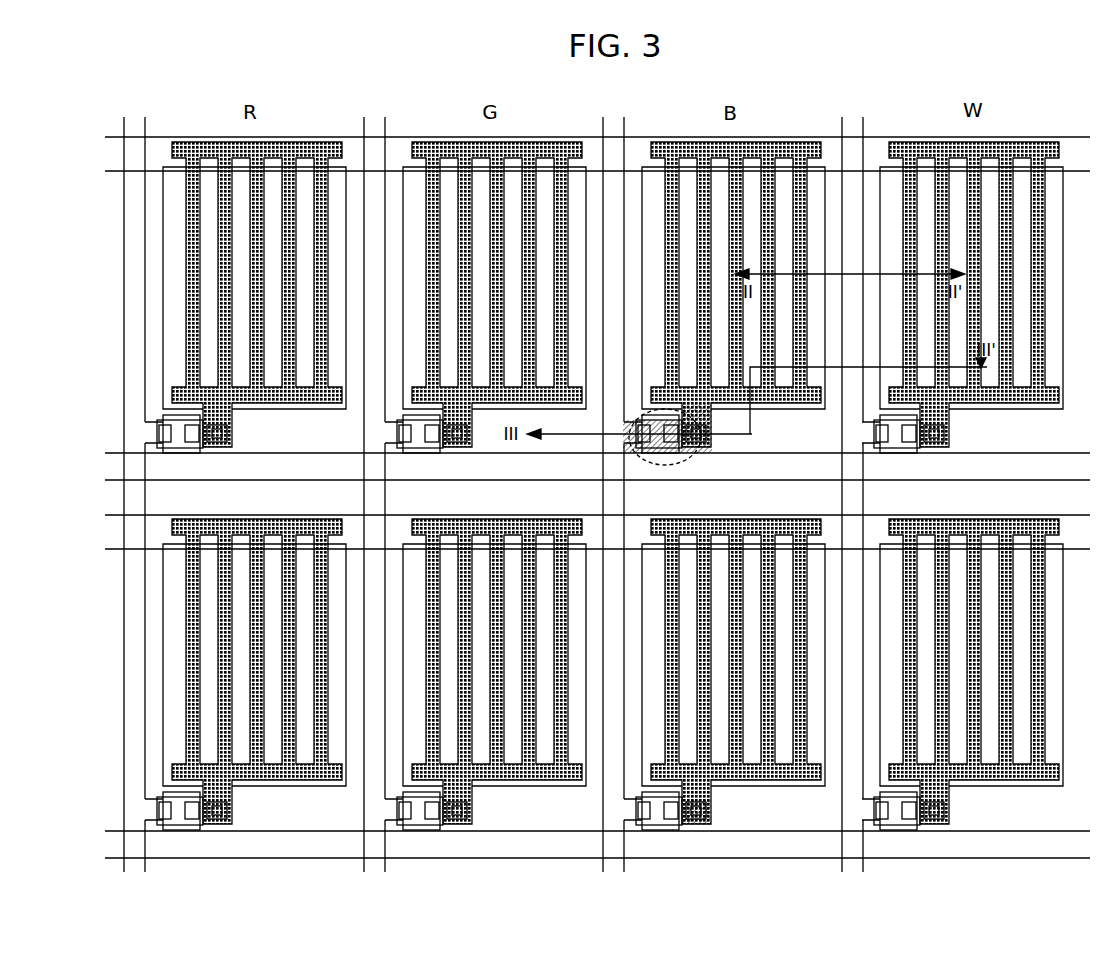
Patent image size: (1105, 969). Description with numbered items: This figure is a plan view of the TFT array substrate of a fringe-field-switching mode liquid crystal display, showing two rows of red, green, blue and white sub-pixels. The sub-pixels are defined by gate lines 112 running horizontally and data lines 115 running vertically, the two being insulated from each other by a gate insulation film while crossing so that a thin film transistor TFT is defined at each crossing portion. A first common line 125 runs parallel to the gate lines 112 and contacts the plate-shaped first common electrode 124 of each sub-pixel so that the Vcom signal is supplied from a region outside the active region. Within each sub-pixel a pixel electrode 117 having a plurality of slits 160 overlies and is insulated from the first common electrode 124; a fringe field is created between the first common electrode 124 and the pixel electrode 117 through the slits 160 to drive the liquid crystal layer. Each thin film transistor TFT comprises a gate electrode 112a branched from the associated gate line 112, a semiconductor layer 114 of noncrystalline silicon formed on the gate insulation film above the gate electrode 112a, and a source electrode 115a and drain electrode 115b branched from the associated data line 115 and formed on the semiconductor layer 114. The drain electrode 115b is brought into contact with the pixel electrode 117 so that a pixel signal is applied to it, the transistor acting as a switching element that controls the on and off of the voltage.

The data line 115 is at (611, 207).
The first common electrode 124 is at (649, 158).
The pixel electrode 117 is at (737, 207).
The first common line 125 is at (828, 140).
The gate line 112 is at (743, 470).
The gate electrode 112a is at (633, 434).
The semiconductor layer 114 is at (665, 455).
The source electrode 115a is at (632, 460).
The drain electrode 115b is at (695, 442).
The thin film transistor TFT is at (684, 458).
The slit 160 is at (785, 384).